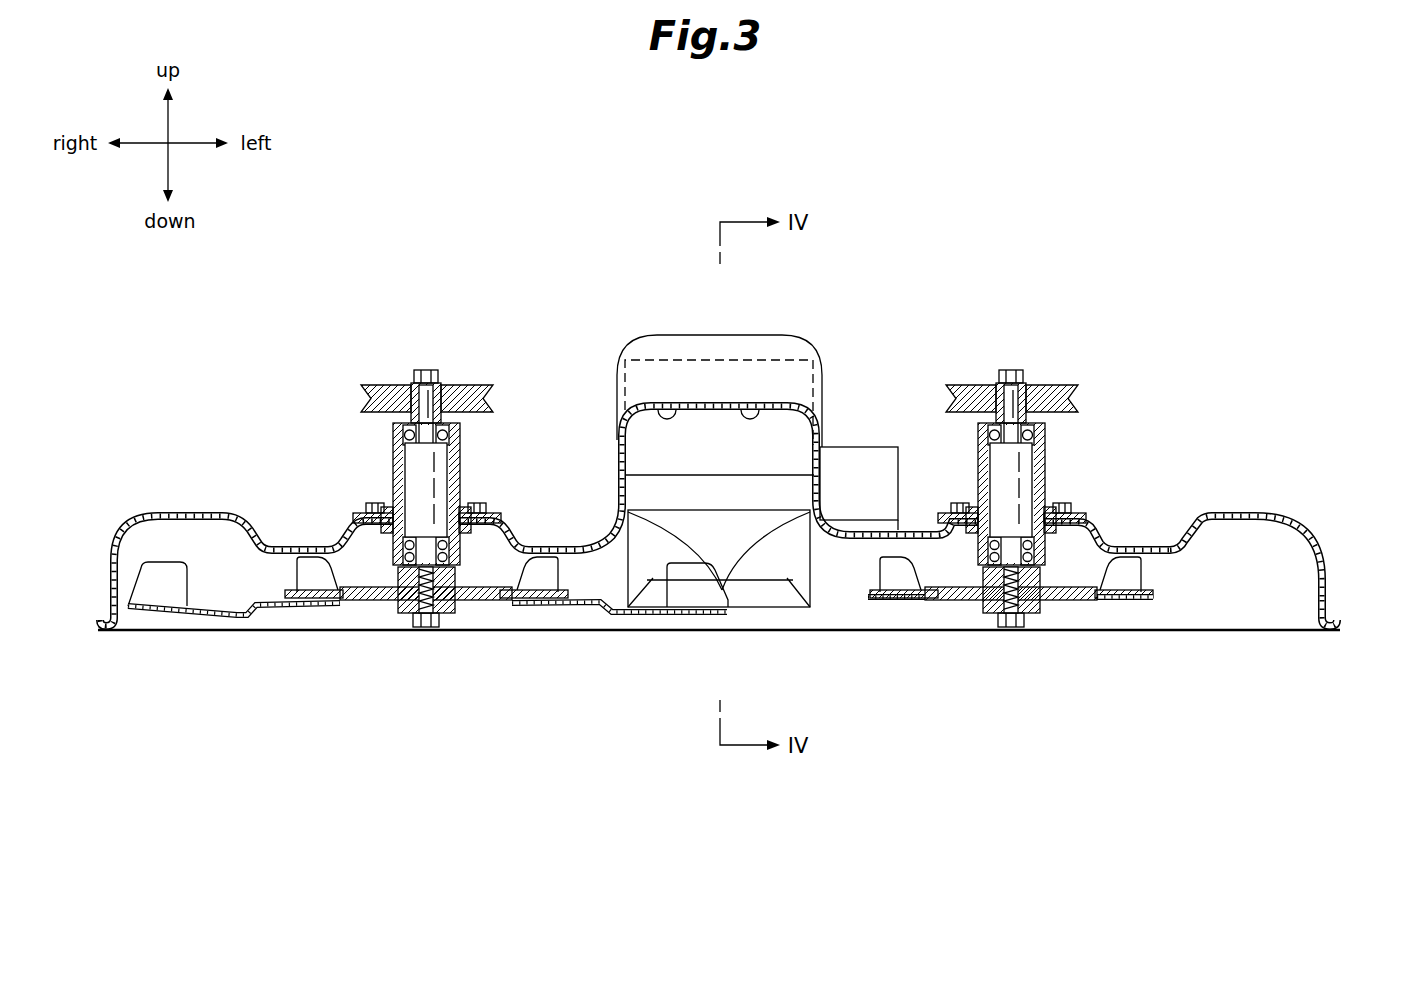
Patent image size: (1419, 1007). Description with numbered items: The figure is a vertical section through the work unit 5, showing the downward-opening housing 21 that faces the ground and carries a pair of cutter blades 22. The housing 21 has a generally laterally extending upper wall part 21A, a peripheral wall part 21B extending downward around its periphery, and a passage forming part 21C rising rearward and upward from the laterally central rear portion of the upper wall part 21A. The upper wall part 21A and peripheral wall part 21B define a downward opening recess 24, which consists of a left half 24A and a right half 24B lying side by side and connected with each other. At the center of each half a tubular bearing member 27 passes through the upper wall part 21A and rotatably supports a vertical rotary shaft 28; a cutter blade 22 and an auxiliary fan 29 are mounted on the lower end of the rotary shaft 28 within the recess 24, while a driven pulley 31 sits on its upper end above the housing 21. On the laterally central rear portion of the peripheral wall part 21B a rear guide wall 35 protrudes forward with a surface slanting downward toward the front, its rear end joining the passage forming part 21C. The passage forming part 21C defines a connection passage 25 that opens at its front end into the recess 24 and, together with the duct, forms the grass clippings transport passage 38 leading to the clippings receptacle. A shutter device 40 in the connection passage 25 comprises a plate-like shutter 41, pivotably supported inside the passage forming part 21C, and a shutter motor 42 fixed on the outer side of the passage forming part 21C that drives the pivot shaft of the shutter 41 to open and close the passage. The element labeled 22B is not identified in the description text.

The work unit 5 is at (956, 328).
The housing 21 is at (1283, 504).
The upper wall part 21A is at (1226, 514).
The peripheral wall part 21B is at (1330, 590).
The passage forming part 21C is at (619, 470).
The cutter blade 22 is at (307, 610).
The blade guard portion 22B is at (163, 572).
The recess 24 is at (845, 538).
The left half of the recess 24A is at (1174, 554).
The right half of the recess 24B is at (215, 520).
The connection passage 25 is at (662, 398).
The bearing member 27 is at (400, 490).
The rotary shaft 28 is at (412, 468).
The auxiliary fan 29 is at (548, 576).
The driven pulley 31 is at (396, 392).
The rear guide wall 35 is at (760, 572).
The grass clippings transport passage 38 is at (752, 404).
The shutter device 40 is at (848, 430).
The shutter 41 is at (783, 422).
The shutter motor 42 is at (876, 458).